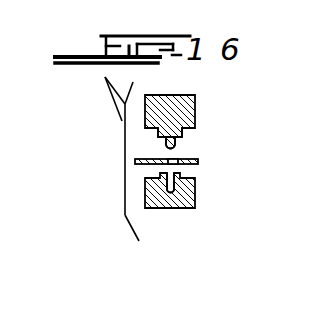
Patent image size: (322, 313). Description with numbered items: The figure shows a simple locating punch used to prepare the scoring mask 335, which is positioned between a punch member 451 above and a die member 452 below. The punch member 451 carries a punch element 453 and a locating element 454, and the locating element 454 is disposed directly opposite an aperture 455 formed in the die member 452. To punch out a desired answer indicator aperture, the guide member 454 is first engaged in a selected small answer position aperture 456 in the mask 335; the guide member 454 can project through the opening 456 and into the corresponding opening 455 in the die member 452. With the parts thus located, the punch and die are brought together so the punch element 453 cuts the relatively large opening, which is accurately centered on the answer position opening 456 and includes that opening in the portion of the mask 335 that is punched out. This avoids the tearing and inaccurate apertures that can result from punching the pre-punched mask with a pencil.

The punch member 451 is at (196, 118).
The die member 452 is at (196, 207).
The punch element 453 is at (158, 137).
The locating element 454 is at (165, 143).
The aperture 455 is at (168, 193).
The answer position aperture 456 is at (176, 157).
The mask 335 is at (198, 161).